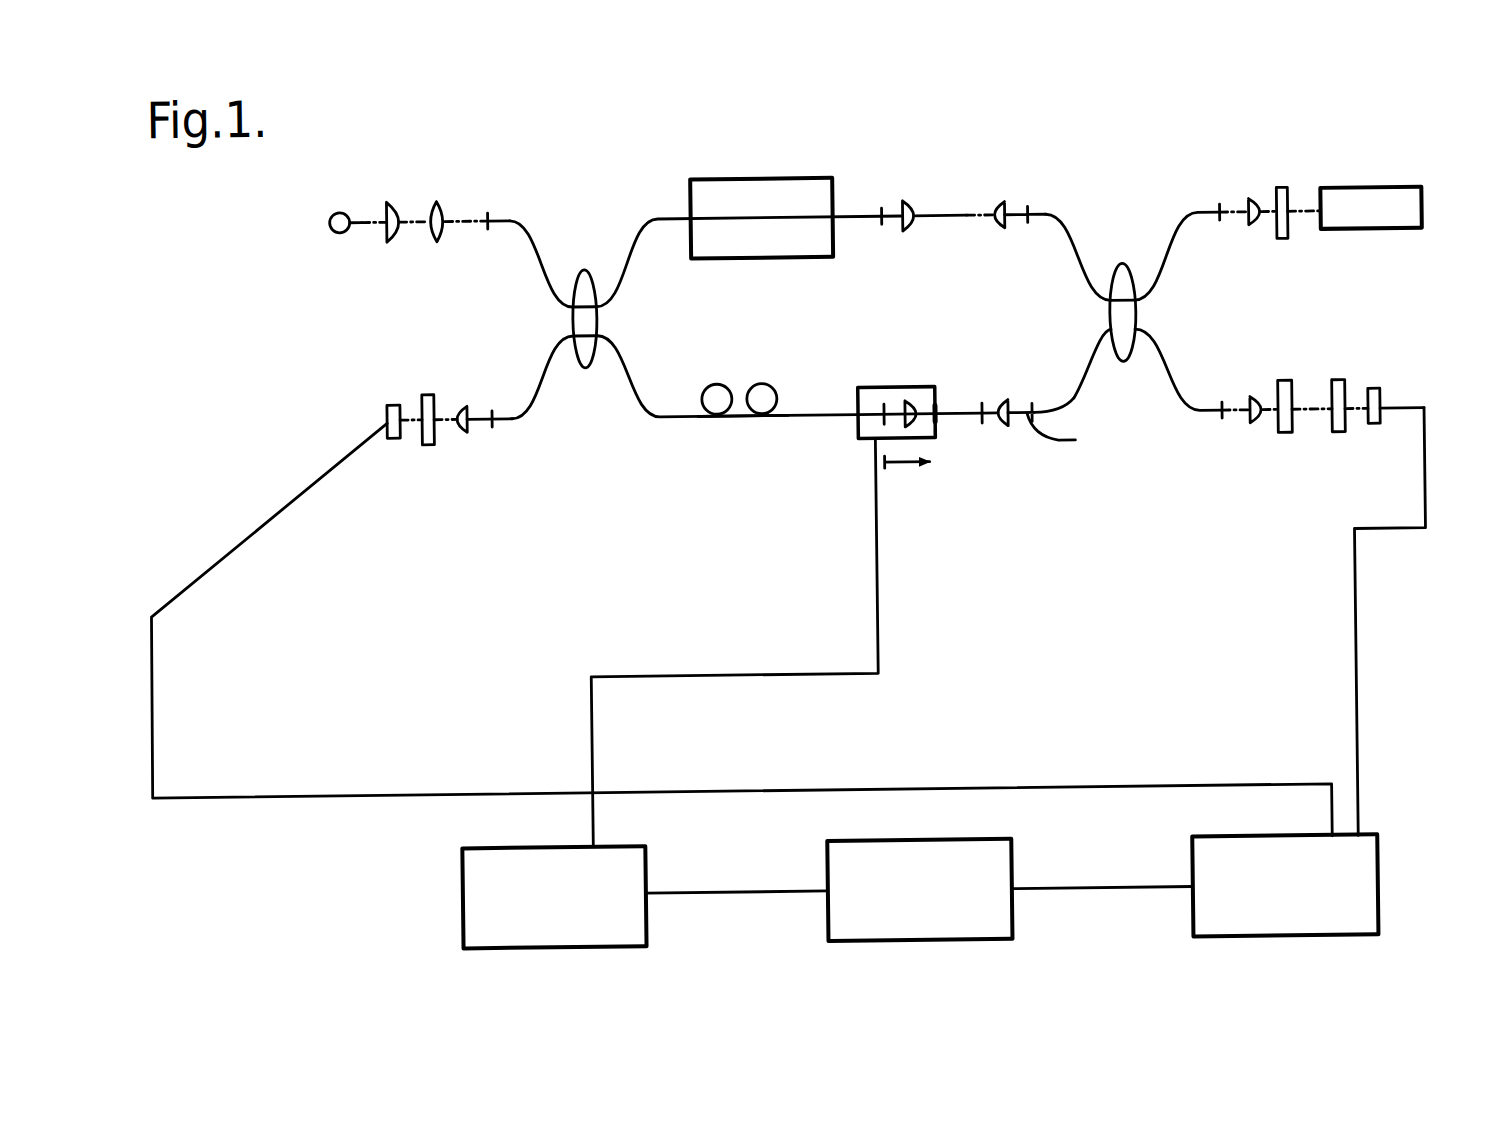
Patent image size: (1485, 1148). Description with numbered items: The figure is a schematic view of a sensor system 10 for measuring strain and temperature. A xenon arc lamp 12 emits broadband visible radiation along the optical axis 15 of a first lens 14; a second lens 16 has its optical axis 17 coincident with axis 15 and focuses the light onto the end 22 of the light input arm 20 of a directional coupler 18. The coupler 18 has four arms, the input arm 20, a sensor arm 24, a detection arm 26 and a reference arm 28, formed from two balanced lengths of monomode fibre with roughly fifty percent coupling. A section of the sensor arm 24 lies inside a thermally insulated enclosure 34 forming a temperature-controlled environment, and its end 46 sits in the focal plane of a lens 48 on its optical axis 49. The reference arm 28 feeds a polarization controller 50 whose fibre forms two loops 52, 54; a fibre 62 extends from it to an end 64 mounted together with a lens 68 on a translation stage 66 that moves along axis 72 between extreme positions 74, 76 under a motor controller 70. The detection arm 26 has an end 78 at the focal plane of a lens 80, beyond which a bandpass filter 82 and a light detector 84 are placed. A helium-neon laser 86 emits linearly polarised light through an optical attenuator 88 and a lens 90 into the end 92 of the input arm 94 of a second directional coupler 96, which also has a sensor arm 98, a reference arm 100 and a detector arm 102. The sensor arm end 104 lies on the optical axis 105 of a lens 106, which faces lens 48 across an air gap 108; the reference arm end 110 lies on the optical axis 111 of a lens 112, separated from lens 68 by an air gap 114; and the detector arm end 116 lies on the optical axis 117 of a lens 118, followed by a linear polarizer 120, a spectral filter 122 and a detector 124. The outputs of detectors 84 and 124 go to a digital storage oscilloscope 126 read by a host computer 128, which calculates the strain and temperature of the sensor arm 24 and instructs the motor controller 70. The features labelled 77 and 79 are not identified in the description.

The sensor system 10 is at (993, 140).
The xenon arc lamp 12 is at (337, 207).
The first lens 14 is at (397, 196).
The optical axis 15 is at (372, 227).
The second lens 16 is at (442, 199).
The optical axis 17 is at (466, 217).
The directional coupler 18 is at (587, 370).
The light input arm 20 is at (537, 229).
The end 22 is at (494, 229).
The sensor arm 24 is at (645, 219).
The detection arm 26 is at (561, 348).
The reference arm 28 is at (625, 389).
The thermally insulated enclosure 34 is at (770, 180).
The end 46 is at (886, 212).
The lens 48 is at (918, 204).
The optical axis 49 is at (936, 214).
The polarization controller 50 is at (744, 416).
The loop 52 is at (707, 390).
The loop 54 is at (776, 390).
The optical fibre 62 is at (835, 413).
The end 64 is at (886, 407).
The translation stage 66 is at (939, 432).
The lens 68 is at (915, 402).
The motor controller 70 is at (644, 882).
The axis 72 is at (903, 506).
The extreme position 74 is at (939, 412).
The extreme position 76 is at (980, 410).
The fiber end 77 is at (1069, 431).
The end 78 is at (496, 422).
The beam path 79 is at (445, 414).
The lens 80 is at (466, 430).
The bandpass filter 82 is at (430, 443).
The light detector 84 is at (387, 436).
The helium-neon laser 86 is at (1403, 196).
The optical attenuator 88 is at (1297, 207).
The lens 90 is at (1261, 206).
The end 92 is at (1225, 211).
The input arm 94 is at (1181, 223).
The directional coupler 96 is at (1143, 322).
The sensor arm 98 is at (1084, 231).
The reference arm 100 is at (1092, 377).
The detector arm 102 is at (1180, 418).
The end 104 is at (1032, 214).
The optical axis 105 is at (1032, 232).
The lens 106 is at (1005, 233).
The air gap 108 is at (961, 228).
The end 110 is at (1074, 409).
The optical axis 111 is at (970, 428).
The lens 112 is at (1010, 431).
The air gap 114 is at (988, 428).
The end 116 is at (1225, 406).
The optical axis 117 is at (1314, 412).
The lens 118 is at (1257, 424).
The linear polarizer 120 is at (1294, 437).
The spectral filter 122 is at (1350, 437).
The detector 124 is at (1387, 400).
The digital storage oscilloscope 126 is at (1377, 868).
The host computer 128 is at (1008, 873).